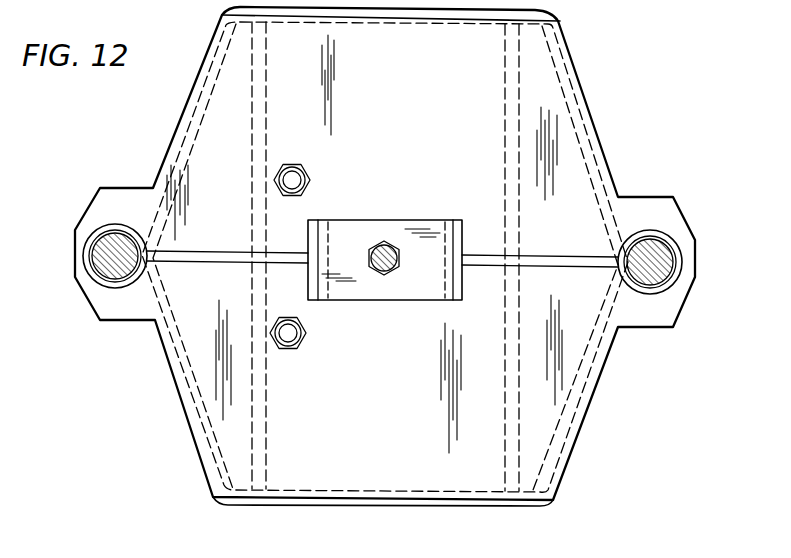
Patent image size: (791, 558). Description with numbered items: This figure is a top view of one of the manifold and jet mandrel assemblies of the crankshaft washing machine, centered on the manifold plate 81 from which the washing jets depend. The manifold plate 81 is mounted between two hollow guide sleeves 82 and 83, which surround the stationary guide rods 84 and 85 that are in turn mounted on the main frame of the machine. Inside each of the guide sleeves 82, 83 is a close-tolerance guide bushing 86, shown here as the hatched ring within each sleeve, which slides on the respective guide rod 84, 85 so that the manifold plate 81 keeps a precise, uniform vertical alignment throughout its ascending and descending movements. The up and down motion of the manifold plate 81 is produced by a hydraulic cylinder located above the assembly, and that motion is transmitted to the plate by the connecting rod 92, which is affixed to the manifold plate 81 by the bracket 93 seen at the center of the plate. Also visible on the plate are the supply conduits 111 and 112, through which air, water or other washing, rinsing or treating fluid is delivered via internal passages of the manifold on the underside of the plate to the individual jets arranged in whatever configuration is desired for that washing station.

The manifold plate 81 is at (424, 140).
The guide sleeve 82 is at (83, 255).
The guide sleeve 83 is at (680, 280).
The guide rod 84 is at (100, 278).
The guide rod 85 is at (665, 265).
The guide bushing 86 is at (122, 275).
The connecting rod 92 is at (386, 248).
The bracket 93 is at (350, 292).
The supply conduit 111 is at (290, 352).
The supply conduit 112 is at (300, 180).